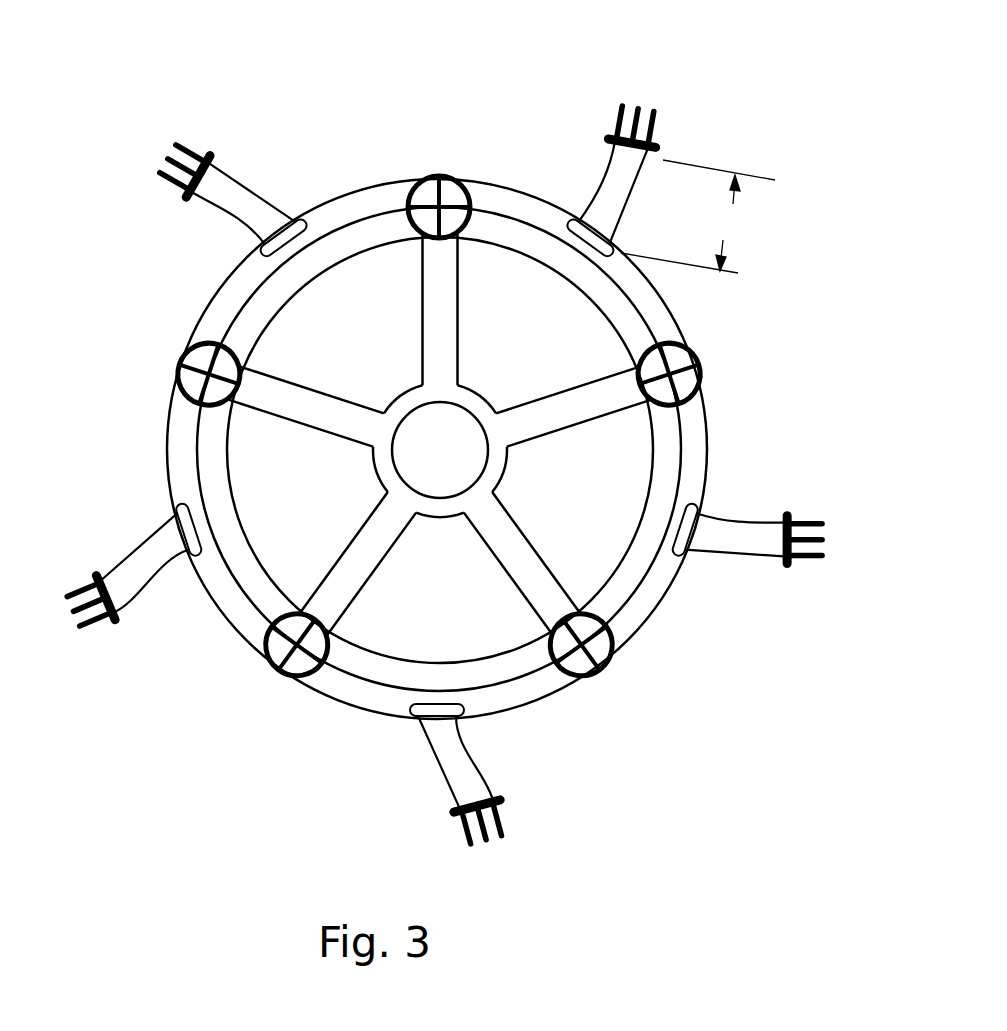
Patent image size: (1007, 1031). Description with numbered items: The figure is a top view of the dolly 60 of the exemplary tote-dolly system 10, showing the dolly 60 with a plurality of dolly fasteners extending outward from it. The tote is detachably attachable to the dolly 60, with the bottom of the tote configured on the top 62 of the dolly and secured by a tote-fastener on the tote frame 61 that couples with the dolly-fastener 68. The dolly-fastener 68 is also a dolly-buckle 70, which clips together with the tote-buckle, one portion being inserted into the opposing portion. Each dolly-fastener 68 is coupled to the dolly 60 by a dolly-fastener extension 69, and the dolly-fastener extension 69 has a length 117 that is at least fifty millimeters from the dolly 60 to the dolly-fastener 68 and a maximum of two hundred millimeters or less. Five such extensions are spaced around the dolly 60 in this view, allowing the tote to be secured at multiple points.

The tote-dolly system 10 is at (448, 435).
The dolly 60 is at (353, 210).
The tote frame 61 is at (498, 208).
The top of the dolly 62 is at (653, 315).
The dolly-fastener 68 is at (163, 142).
The dolly-fastener extension 69 is at (240, 198).
The dolly-buckle 70 is at (190, 138).
The length of the dolly-fastener extension 117 is at (698, 216).